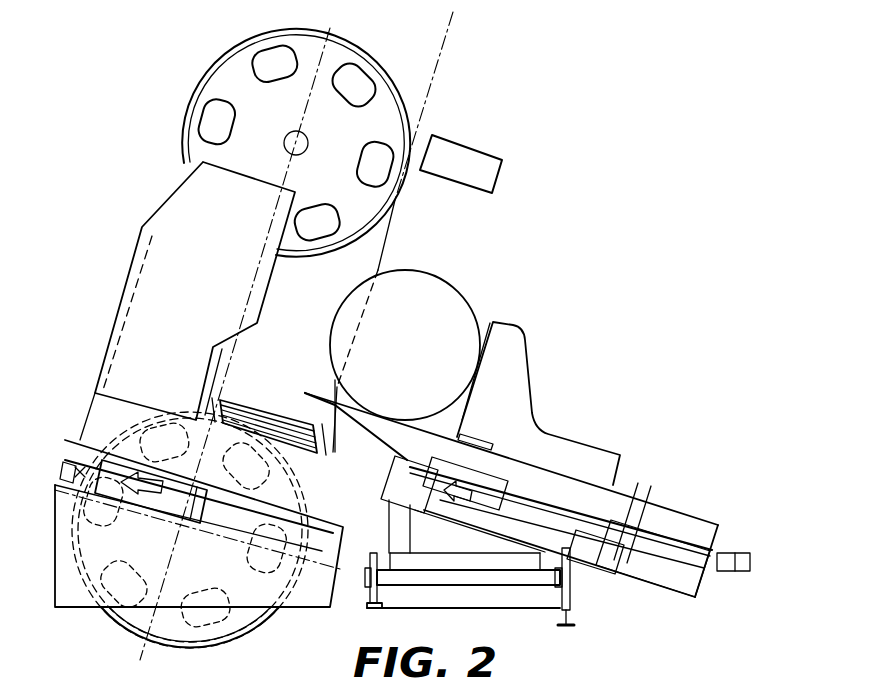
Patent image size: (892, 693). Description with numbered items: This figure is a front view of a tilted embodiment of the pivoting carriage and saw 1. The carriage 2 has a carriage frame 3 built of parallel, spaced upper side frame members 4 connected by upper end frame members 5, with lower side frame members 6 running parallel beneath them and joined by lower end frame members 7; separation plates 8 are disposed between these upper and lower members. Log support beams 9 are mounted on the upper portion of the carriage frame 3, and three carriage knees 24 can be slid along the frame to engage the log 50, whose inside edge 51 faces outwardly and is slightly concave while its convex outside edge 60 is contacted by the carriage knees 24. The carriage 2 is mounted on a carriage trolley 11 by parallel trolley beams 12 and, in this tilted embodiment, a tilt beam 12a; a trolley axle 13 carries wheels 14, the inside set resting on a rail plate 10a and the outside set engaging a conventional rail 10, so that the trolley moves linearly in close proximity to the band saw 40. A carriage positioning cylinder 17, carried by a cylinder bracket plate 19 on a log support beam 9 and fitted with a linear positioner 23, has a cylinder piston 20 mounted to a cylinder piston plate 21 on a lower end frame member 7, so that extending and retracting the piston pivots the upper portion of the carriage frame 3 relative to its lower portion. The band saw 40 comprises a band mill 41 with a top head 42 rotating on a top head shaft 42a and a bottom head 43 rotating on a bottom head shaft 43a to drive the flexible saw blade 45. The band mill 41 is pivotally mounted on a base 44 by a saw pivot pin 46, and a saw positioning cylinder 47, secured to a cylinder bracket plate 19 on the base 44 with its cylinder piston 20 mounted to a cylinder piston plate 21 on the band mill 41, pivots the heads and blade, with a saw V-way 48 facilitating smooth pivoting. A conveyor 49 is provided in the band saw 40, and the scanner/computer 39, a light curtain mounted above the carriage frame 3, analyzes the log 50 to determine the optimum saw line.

The pivoting carriage and saw 1 is at (474, 132).
The carriage 2 is at (668, 497).
The carriage frame 3 is at (675, 602).
The upper side frame members 4 is at (388, 460).
The upper end frame members 5 is at (592, 522).
The lower side frame members 6 is at (398, 490).
The lower end frame members 7 is at (670, 588).
The separation plates 8 is at (664, 552).
The log support beams 9 is at (700, 545).
The rail 10 is at (576, 628).
The rail plate 10a is at (382, 606).
The carriage trolley 11 is at (576, 604).
The trolley beams 12 is at (406, 550).
The tilt beam 12a is at (396, 518).
The trolley axles 13 is at (478, 596).
The wheels 14 is at (364, 600).
The carriage positioning cylinder 17 is at (490, 470).
The cylinder bracket plate 19 is at (434, 458).
The cylinder piston 20 is at (566, 515).
The cylinder piston plate 21 is at (642, 500).
The linear positioner 23 is at (480, 456).
The carriage knees 24 is at (548, 402).
The scanner/computer 39 is at (474, 175).
The band saw 40 is at (285, 332).
The band mill 41 is at (118, 266).
The top head 42 is at (334, 42).
The top head shaft 42a is at (304, 148).
The bottom head 43 is at (174, 638).
The bottom head shaft 43a is at (184, 525).
The base 44 is at (250, 622).
The saw blade 45 is at (388, 236).
The saw pivot pin 46 is at (280, 600).
The saw positioning cylinder 47 is at (134, 452).
The saw V-way 48 is at (58, 464).
The conveyor 49 is at (236, 396).
The log 50 is at (419, 270).
The inside edge 51 is at (332, 316).
The outside edge 60 is at (470, 356).